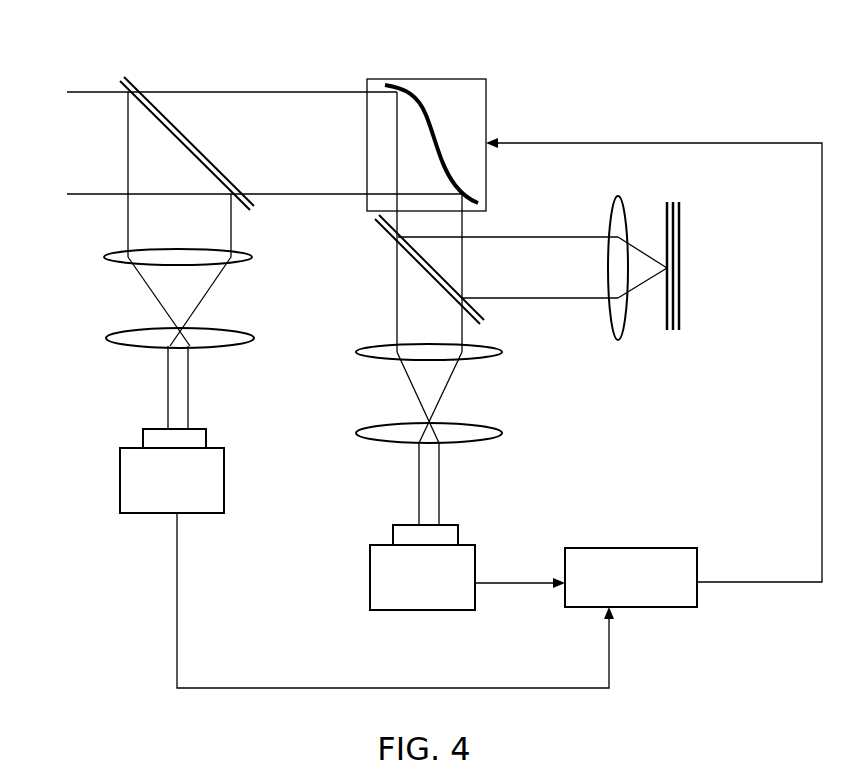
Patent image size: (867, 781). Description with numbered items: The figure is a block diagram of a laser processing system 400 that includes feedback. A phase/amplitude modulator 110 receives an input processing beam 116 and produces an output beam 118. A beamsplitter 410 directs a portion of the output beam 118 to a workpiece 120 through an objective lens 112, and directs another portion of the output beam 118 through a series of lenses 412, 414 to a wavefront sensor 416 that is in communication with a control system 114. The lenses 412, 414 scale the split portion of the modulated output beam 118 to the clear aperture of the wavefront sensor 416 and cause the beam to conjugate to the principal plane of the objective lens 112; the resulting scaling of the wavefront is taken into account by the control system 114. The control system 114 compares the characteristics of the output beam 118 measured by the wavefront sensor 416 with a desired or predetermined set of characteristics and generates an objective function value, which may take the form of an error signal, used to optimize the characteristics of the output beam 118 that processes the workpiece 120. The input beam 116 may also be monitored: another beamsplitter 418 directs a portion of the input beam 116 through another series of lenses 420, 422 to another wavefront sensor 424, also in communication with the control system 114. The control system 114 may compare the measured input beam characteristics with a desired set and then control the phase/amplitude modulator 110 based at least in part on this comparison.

The laser processing system 400 is at (194, 40).
The input processing beam 116 is at (331, 90).
The beamsplitter 418 is at (180, 133).
The phase/amplitude modulator 110 is at (486, 124).
The beamsplitter 410 is at (393, 238).
The output beam 118 is at (513, 237).
The objective lens 112 is at (621, 197).
The workpiece 120 is at (680, 283).
The lens 420 is at (125, 265).
The lens 422 is at (120, 346).
The wavefront sensor 424 is at (120, 468).
The lens 412 is at (375, 360).
The lens 414 is at (375, 440).
The wavefront sensor 416 is at (368, 563).
The control system 114 is at (609, 548).